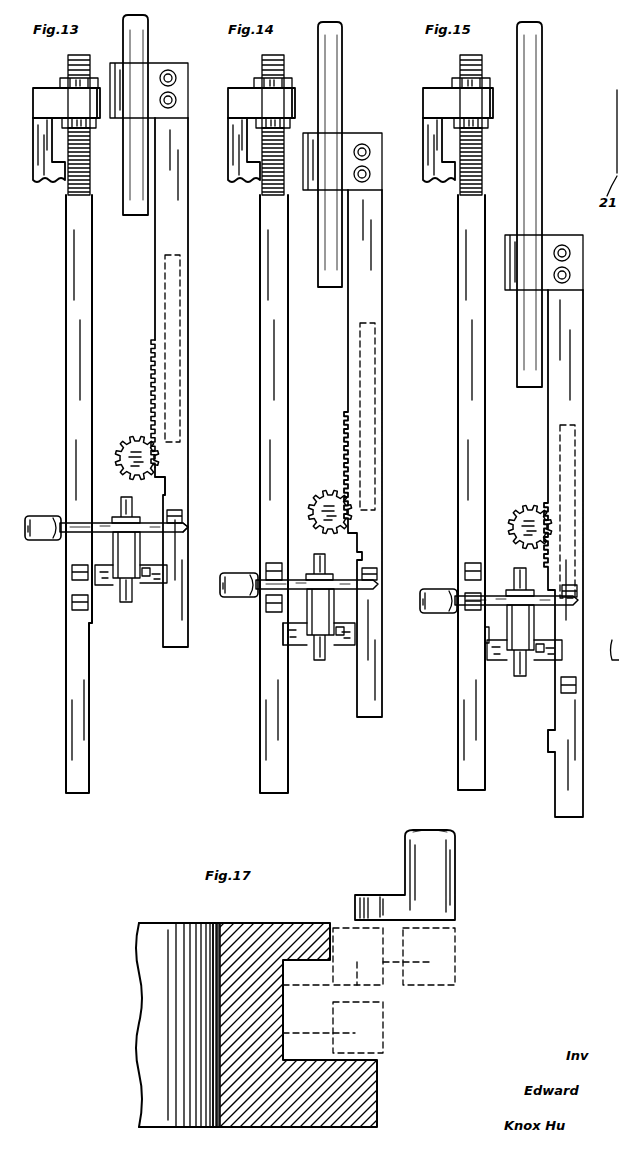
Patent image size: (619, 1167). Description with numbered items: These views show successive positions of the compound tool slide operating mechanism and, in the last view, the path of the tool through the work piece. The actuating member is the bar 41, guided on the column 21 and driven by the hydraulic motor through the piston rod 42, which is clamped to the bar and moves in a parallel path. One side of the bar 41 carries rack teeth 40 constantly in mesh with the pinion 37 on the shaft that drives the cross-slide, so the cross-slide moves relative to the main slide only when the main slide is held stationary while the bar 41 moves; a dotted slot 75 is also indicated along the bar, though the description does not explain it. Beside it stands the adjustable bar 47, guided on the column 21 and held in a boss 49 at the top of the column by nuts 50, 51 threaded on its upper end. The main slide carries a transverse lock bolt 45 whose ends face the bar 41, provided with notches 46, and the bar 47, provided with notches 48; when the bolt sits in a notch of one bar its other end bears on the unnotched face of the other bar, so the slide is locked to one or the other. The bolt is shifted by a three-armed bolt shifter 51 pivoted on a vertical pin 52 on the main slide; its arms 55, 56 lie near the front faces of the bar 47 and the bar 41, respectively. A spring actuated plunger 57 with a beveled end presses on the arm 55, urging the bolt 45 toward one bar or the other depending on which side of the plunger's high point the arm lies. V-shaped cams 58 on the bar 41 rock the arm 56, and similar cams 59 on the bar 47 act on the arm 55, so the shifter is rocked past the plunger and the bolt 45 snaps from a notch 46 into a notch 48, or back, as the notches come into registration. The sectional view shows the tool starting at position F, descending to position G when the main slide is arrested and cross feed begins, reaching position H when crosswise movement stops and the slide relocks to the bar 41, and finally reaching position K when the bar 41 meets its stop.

In FIG. 13, the column 21 is at (43, 183).
In FIG. 14, the column 21 is at (238, 183).
In FIG. 15, the column 21 is at (433, 183).
In FIG. 13, the pinion 37 is at (137, 446).
In FIG. 14, the pinion 37 is at (331, 500).
In FIG. 15, the pinion 37 is at (531, 515).
In FIG. 13, the rack teeth 40 is at (153, 384).
In FIG. 13, the bar 41 is at (183, 293).
In FIG. 14, the bar 41 is at (378, 360).
In FIG. 15, the bar 41 is at (578, 394).
In FIG. 13, the piston rod 42 is at (134, 212).
In FIG. 14, the piston rod 42 is at (336, 125).
In FIG. 15, the piston rod 42 is at (540, 161).
In FIG. 13, the lock bolt 45 is at (153, 586).
In FIG. 14, the lock bolt 45 is at (343, 645).
In FIG. 15, the lock bolt 45 is at (546, 660).
In FIG. 13, the notch 46 is at (167, 481).
In FIG. 15, the notch 46 is at (555, 740).
In FIG. 13, the adjustable bar 47 is at (70, 411).
In FIG. 14, the adjustable bar 47 is at (265, 411).
In FIG. 15, the adjustable bar 47 is at (464, 449).
In FIG. 13, the notch 48 is at (91, 635).
In FIG. 14, the notch 48 is at (282, 635).
In FIG. 15, the notch 48 is at (483, 634).
In FIG. 13, the boss 49 is at (66, 103).
In FIG. 14, the boss 49 is at (261, 103).
In FIG. 15, the boss 49 is at (458, 103).
In FIG. 13, the nut 50 is at (64, 79).
In FIG. 14, the nut 50 is at (259, 79).
In FIG. 15, the nut 50 is at (454, 79).
In FIG. 13, the nut; bolt shifter 51 is at (91, 127).
In FIG. 14, the nut; bolt shifter 51 is at (295, 389).
In FIG. 15, the nut; bolt shifter 51 is at (488, 125).
In FIG. 13, the vertical pin 52 is at (124, 500).
In FIG. 14, the vertical pin 52 is at (319, 567).
In FIG. 15, the vertical pin 52 is at (517, 573).
In FIG. 13, the arm 55 is at (80, 534).
In FIG. 14, the arm 55 is at (317, 584).
In FIG. 15, the arm 55 is at (516, 600).
In FIG. 13, the arm 56 is at (188, 528).
In FIG. 13, the spring actuated plunger 57 is at (40, 516).
In FIG. 14, the spring actuated plunger 57 is at (234, 573).
In FIG. 15, the spring actuated plunger 57 is at (432, 611).
In FIG. 13, the V-shaped cam 58 is at (182, 512).
In FIG. 14, the V-shaped cam 58 is at (378, 574).
In FIG. 15, the V-shaped cam 58 is at (577, 685).
In FIG. 13, the V-shaped cam 59 is at (72, 573).
In FIG. 14, the V-shaped cam 59 is at (270, 610).
In FIG. 15, the V-shaped cam 59 is at (465, 568).
In FIG. 13, the slot 75 is at (178, 347).
In FIG. 14, the slot 75 is at (372, 410).
In FIG. 15, the slot 75 is at (573, 462).
In FIG. 17, the starting position F is at (440, 870).
In FIG. 17, the tool position G is at (446, 960).
In FIG. 17, the tool position H is at (336, 928).
In FIG. 17, the tool position K is at (383, 1024).